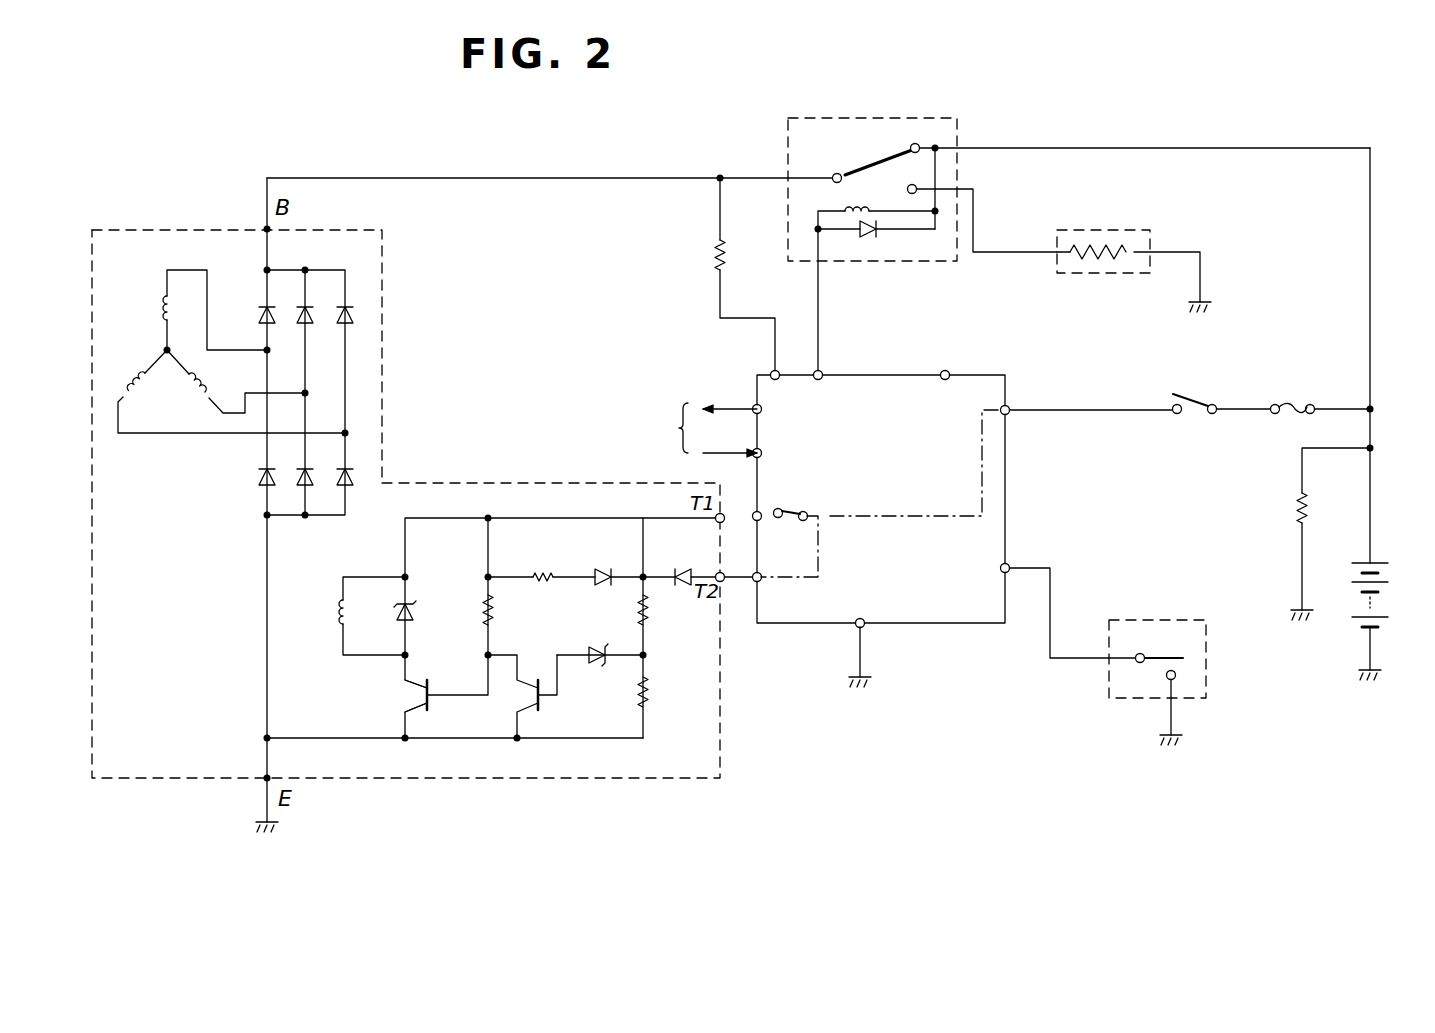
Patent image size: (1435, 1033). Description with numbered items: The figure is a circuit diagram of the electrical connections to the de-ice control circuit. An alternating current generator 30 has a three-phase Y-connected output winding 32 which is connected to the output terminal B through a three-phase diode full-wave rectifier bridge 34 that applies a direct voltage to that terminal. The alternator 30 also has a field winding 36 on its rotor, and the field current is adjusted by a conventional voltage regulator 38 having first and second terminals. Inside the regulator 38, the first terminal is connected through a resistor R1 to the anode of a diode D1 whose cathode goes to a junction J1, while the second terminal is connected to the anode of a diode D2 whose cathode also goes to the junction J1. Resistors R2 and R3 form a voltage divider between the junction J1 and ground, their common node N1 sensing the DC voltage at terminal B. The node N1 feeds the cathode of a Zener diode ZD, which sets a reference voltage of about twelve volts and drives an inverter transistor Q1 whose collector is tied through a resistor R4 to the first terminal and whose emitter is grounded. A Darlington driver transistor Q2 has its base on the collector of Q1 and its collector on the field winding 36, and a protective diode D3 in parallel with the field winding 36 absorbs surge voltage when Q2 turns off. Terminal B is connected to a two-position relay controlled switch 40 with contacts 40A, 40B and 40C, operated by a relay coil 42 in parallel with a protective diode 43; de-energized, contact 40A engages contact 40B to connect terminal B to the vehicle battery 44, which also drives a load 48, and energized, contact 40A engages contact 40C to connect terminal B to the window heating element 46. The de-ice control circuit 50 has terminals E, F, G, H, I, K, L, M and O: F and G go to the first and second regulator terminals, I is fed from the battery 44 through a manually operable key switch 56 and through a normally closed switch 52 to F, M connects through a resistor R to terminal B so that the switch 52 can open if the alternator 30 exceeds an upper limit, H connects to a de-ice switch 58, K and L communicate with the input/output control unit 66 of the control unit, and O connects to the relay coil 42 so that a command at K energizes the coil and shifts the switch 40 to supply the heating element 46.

The alternating current generator 30 is at (193, 228).
The output winding 32 is at (153, 345).
The three-phase diode full-wave rectifier bridge 34 is at (358, 349).
The field winding 36 is at (338, 610).
The voltage regulator 38 is at (544, 508).
The two-position switch 40 is at (880, 140).
The contact 40A is at (834, 172).
The contact 40B is at (922, 145).
The contact 40C is at (920, 185).
The relay coil 42 is at (838, 209).
The protective diode 43 is at (871, 239).
The vehicle battery 44 is at (1384, 580).
The electrical resistance heating element 46 is at (1113, 276).
The load 48 is at (1292, 523).
The de-ice control circuit 50 is at (999, 374).
The normally closed switch 52 is at (794, 504).
The key switch 56 is at (1193, 414).
The de-ice switch 58 is at (1112, 702).
The input/output control unit 66 is at (696, 430).
The resistor R is at (710, 266).
The resistor R1 is at (540, 572).
The resistor R2 is at (650, 607).
The resistor R3 is at (650, 692).
The resistor R4 is at (483, 610).
The diode D1 is at (602, 570).
The diode D2 is at (682, 570).
The protective diode D3 is at (414, 608).
The Zener diode ZD is at (597, 665).
The transistor Q1 is at (527, 699).
The transistor Q2 is at (403, 694).
The junction J1 is at (643, 538).
The node N1 is at (650, 657).